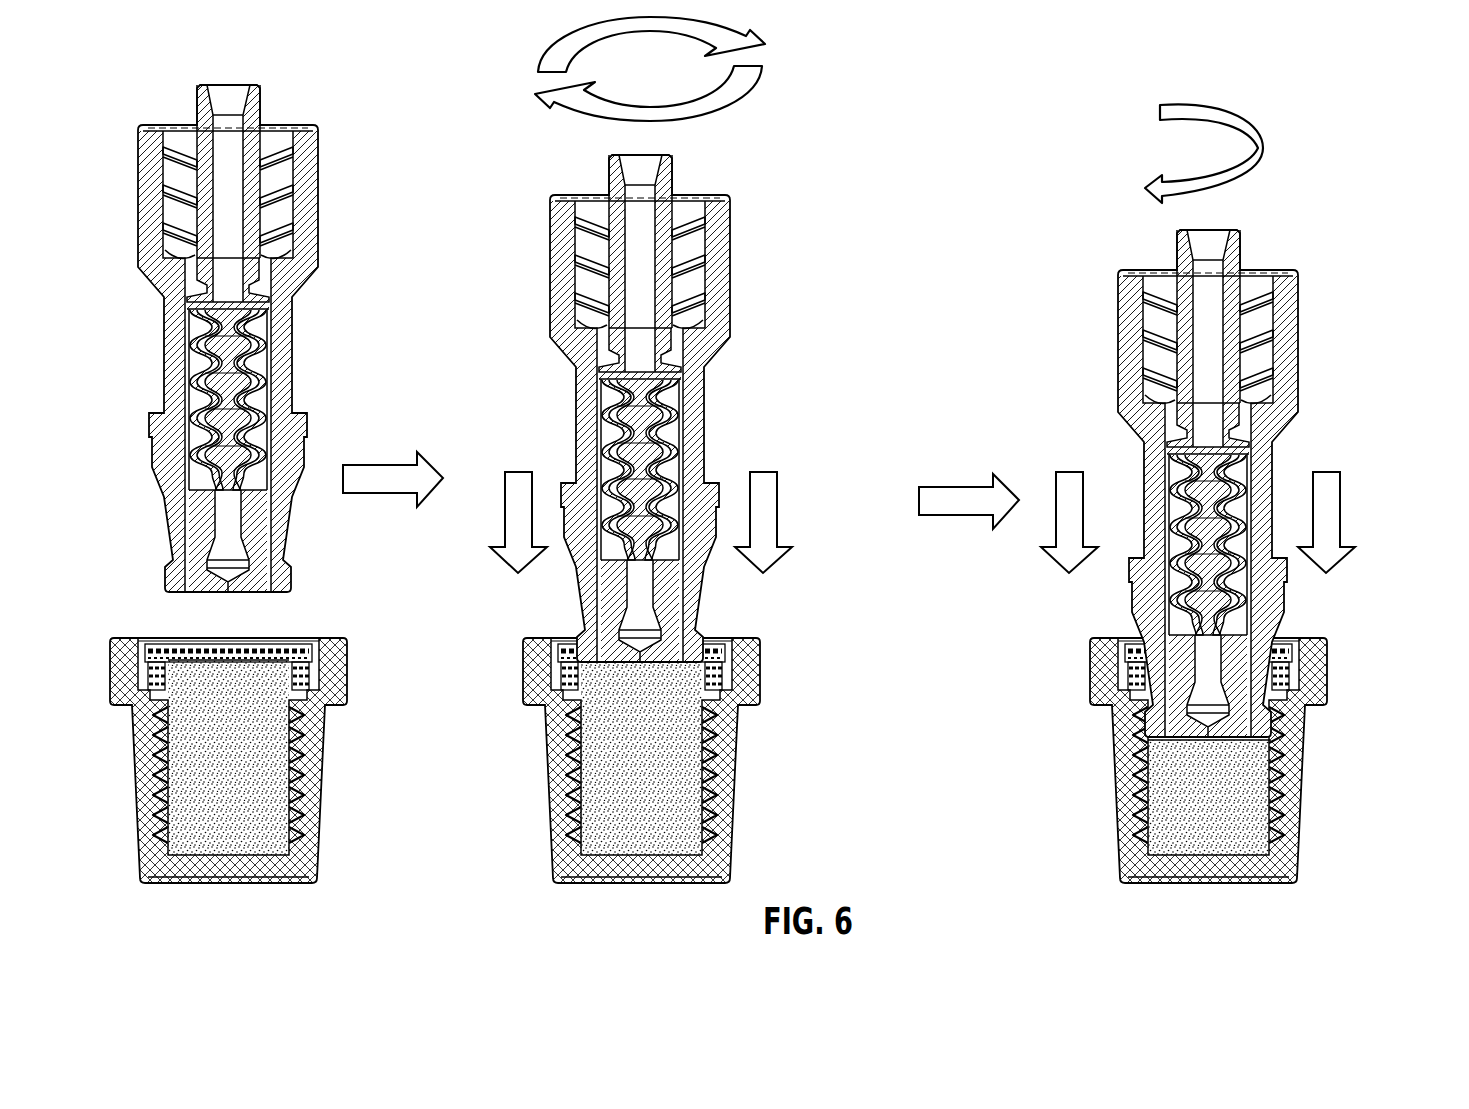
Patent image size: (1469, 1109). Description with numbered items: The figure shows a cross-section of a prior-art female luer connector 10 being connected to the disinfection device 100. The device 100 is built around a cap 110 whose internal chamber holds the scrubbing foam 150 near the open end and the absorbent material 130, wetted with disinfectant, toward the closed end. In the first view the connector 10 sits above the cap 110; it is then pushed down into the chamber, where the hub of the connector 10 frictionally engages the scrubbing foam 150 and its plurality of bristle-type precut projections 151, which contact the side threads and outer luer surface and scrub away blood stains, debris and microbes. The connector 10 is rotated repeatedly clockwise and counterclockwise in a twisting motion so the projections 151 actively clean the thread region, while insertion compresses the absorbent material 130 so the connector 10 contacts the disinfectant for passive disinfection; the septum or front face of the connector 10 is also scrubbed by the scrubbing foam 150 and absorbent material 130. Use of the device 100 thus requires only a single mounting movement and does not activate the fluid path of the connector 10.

The female connector 10 is at (303, 249).
The disinfection device 100 is at (784, 743).
The cap 110 is at (312, 814).
The absorbent material 130 is at (280, 772).
The scrubbing foam 150 is at (317, 688).
The bristle-type precut projections 151 is at (722, 668).